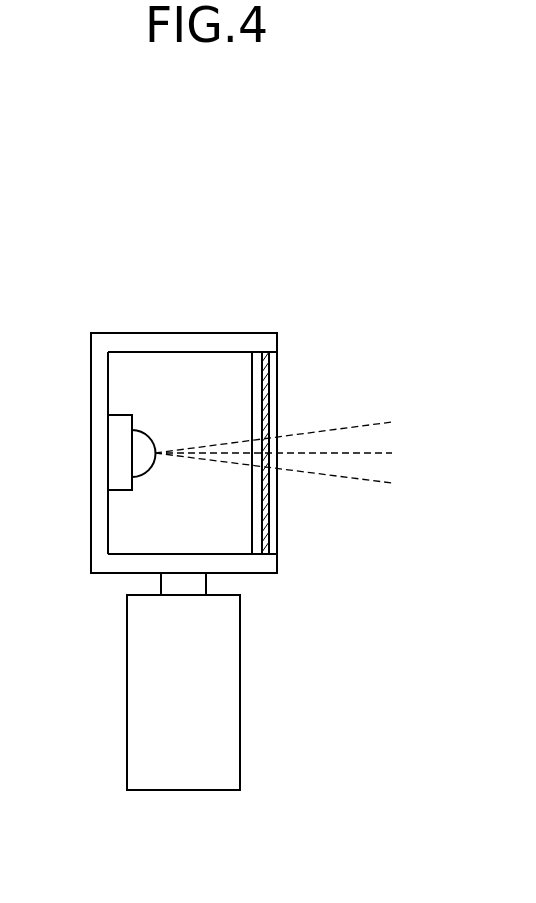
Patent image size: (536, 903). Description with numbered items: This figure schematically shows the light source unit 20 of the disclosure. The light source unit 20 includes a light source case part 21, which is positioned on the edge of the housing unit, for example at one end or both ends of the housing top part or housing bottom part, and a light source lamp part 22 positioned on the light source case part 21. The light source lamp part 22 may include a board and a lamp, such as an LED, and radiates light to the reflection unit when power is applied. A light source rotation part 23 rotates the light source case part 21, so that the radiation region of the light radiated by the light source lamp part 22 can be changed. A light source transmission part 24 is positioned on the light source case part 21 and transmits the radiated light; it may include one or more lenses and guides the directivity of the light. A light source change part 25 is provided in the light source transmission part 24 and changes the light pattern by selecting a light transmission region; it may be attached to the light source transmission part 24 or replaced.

The light source unit 20 is at (395, 197).
The light source case part 21 is at (180, 339).
The light source lamp part 22 is at (151, 430).
The light source rotation part 23 is at (240, 677).
The light source transmission part 24 is at (268, 525).
The light source change part 25 is at (263, 543).